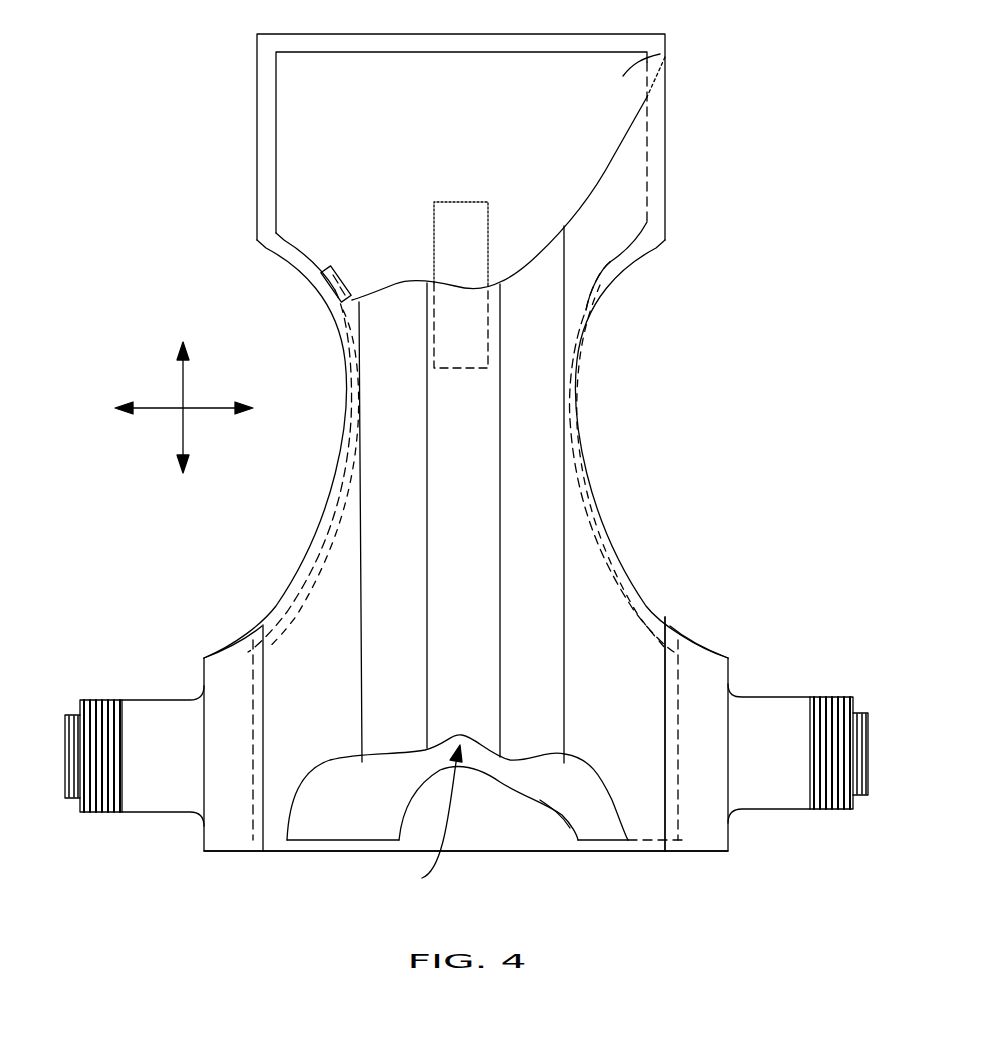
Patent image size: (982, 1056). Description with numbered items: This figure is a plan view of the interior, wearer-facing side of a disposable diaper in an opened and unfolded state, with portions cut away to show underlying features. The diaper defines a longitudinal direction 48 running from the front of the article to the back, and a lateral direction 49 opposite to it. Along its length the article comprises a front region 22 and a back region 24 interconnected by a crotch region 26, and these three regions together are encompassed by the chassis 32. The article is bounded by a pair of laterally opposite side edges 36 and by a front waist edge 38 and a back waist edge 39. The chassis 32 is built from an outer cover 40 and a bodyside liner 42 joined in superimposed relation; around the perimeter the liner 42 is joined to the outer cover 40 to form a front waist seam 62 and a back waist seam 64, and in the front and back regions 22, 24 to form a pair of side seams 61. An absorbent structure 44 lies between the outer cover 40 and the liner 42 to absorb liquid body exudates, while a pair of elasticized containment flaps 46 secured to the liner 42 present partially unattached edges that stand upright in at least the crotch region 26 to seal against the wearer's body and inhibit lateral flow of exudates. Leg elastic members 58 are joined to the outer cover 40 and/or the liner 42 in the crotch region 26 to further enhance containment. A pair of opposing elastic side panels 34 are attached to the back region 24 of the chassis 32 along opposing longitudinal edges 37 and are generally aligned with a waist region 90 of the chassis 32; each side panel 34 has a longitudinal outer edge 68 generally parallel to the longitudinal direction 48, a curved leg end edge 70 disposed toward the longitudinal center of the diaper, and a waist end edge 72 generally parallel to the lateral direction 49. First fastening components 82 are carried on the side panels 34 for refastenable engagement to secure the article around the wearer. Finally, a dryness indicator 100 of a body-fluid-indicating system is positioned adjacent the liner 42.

The front region 22 is at (480, 159).
The back region 24 is at (475, 679).
The crotch region 26 is at (480, 415).
The chassis 32 is at (372, 530).
The elastic side panels 34 is at (226, 840).
The side edges 36 is at (333, 464).
The longitudinal edges 37 is at (266, 728).
The front waist edge 38 is at (318, 34).
The back waist edge 39 is at (338, 856).
The outer cover 40 is at (455, 842).
The bodyside liner 42 is at (619, 694).
The absorbent structure 44 is at (660, 54).
The containment flaps 46 is at (372, 636).
The longitudinal direction 48 is at (185, 375).
The lateral direction 49 is at (200, 410).
The leg elastic members 58 is at (348, 276).
The side seams 61 is at (243, 645).
The front waist seam 62 is at (487, 34).
The back waist seam 64 is at (548, 843).
The longitudinal outer edge 68 is at (203, 745).
The leg end edge 70 is at (224, 650).
The waist end edges 72 is at (679, 855).
The first fastening components 82 is at (96, 814).
The waist region 90 is at (427, 817).
The dryness indicator 100 is at (490, 214).